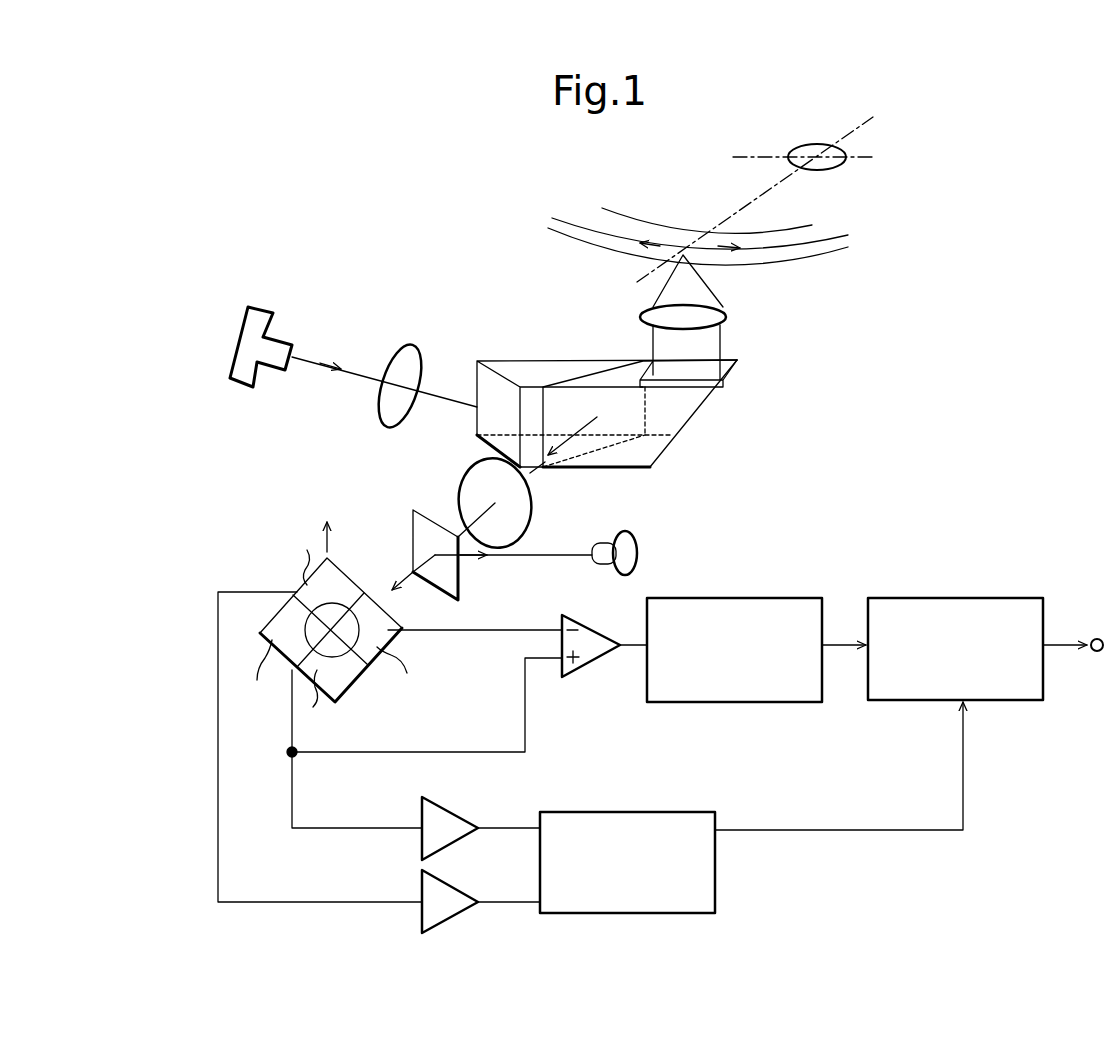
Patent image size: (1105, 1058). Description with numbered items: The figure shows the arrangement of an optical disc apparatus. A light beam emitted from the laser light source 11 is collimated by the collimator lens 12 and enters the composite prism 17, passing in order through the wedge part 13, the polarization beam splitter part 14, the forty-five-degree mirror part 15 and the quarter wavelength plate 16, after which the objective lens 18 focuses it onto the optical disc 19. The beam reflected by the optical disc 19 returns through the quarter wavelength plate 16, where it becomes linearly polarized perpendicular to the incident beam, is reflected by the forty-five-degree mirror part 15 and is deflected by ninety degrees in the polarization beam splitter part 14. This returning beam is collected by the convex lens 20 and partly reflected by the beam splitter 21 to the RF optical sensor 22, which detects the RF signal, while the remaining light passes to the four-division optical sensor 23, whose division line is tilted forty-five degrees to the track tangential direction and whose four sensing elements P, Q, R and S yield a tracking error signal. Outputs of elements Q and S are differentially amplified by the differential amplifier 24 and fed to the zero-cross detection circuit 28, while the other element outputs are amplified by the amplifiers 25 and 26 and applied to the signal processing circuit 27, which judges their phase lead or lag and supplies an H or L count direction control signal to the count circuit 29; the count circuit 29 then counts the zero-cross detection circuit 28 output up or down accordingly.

The laser light source 11 is at (255, 305).
The collimator lens 12 is at (412, 343).
The wedge part 13 is at (525, 362).
The polarization beam splitter part 14 is at (613, 373).
The 45-degree mirror part 15 is at (690, 420).
The ¼ wavelength plate 16 is at (709, 363).
The composite prism 17 is at (726, 383).
The objective lens 18 is at (727, 317).
The optical disc 19 is at (833, 243).
The convex lens 20 is at (467, 472).
The beam splitter 21 is at (413, 530).
The RF optical sensor 22 is at (637, 553).
The four-division optical sensor 23 is at (278, 571).
The differential amplifier 24 is at (597, 664).
The amplifier 25 is at (463, 910).
The amplifier 26 is at (462, 822).
The signal processing circuit 27 is at (628, 812).
The zero-cross detection circuit 28 is at (751, 598).
The count circuit 29 is at (973, 598).